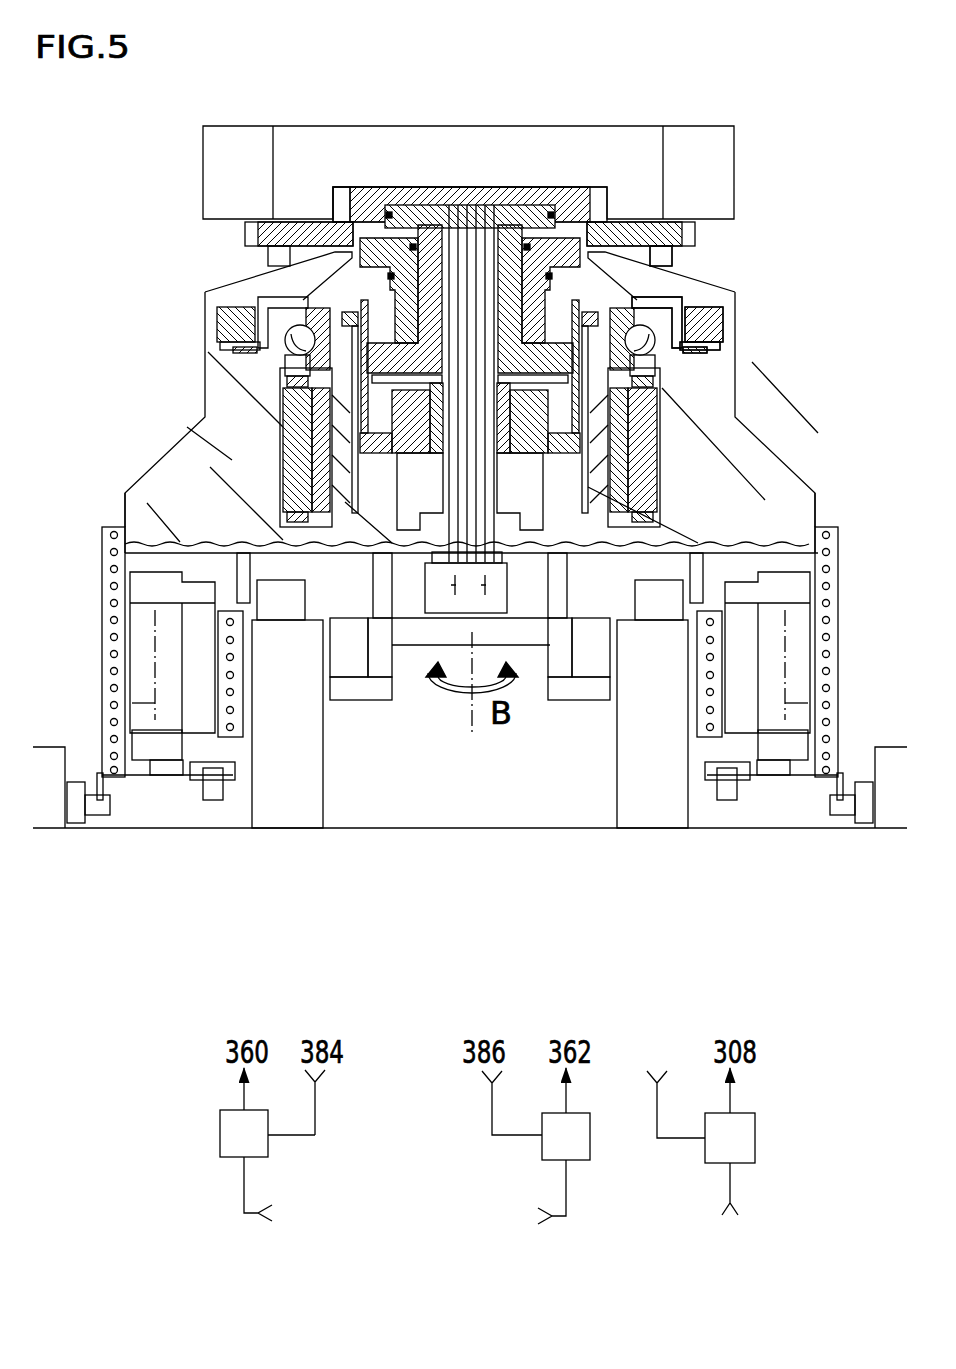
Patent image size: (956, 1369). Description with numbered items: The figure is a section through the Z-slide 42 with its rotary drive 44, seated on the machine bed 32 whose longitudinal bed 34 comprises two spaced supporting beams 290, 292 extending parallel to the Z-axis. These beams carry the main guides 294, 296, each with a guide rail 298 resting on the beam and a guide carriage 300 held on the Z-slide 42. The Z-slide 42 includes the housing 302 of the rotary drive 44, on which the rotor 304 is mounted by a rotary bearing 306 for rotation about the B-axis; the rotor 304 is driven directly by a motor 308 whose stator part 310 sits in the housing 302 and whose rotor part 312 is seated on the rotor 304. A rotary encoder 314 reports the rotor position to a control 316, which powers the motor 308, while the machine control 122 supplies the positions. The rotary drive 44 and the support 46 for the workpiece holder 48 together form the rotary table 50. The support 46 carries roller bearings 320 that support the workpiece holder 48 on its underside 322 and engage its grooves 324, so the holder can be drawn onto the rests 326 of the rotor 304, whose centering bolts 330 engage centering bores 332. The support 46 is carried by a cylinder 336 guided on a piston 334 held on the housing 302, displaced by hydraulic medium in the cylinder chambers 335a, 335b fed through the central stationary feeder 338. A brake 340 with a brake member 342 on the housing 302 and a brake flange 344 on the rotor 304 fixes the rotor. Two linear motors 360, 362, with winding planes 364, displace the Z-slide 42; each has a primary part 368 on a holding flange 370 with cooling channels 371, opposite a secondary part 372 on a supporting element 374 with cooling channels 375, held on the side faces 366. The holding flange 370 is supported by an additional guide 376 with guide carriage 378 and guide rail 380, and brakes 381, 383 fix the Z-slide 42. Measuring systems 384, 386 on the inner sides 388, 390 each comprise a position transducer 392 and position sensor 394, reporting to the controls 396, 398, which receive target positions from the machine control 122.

The rotary table 50 is at (662, 118).
The workpiece holder 48 is at (223, 207).
The centering bolts 330 is at (708, 232).
The centering bores 332 is at (690, 225).
The roller bearings 320 is at (338, 228).
The support 46 is at (373, 222).
The underside 322 is at (432, 222).
The grooves 324 is at (300, 222).
The rests 326 is at (670, 260).
The cylinder 336 is at (357, 236).
The piston 334 is at (516, 205).
The feeder 338 is at (500, 228).
The cylinder chamber 335a is at (468, 210).
The cylinder chamber 335b is at (545, 212).
The rotary drive 44 is at (192, 293).
The housing 302 is at (768, 446).
The Z-slide 42 is at (152, 514).
The rotary bearing 306 is at (283, 352).
The brake 340 is at (736, 314).
The rotor 304 is at (736, 291).
The brake member 342 is at (738, 336).
The brake flange 344 is at (698, 354).
The motor 308 is at (273, 413).
The stator part 310 is at (300, 478).
The rotor part 312 is at (318, 488).
The main guide 296 is at (684, 557).
The main guide 294 is at (243, 592).
The machine bed 32 is at (754, 824).
The longitudinal bed 34 is at (491, 804).
The guide carriage 300 is at (243, 563).
The guide rail 298 is at (257, 622).
The secondary part 372 is at (195, 675).
The winding planes 364 is at (150, 704).
The primary part 368 is at (148, 752).
The holding flange 370 is at (103, 725).
The linear motor 360 is at (167, 758).
The supporting beam 290 is at (331, 790).
The guide rail 380 is at (286, 803).
The guide carriage 378 is at (198, 782).
The additional guide 376 is at (213, 791).
The cooling channels 371 is at (122, 775).
The brake 381 is at (48, 822).
The position transducer 392 is at (343, 690).
The inner side 388 is at (338, 700).
The position sensor 394 is at (345, 668).
The measuring system 384 is at (372, 672).
The supporting element 374 is at (717, 660).
The cooling channels 375 is at (715, 702).
The linear motor 362 is at (785, 756).
The side faces 366 is at (693, 773).
The brake 383 is at (885, 827).
The measuring system 386 is at (588, 677).
The inner side 390 is at (615, 808).
The supporting beam 292 is at (655, 795).
The control 396 is at (272, 1112).
The control 398 is at (536, 1114).
The control 316 is at (730, 1115).
The rotary encoder 314 is at (672, 1085).
The machine control 122 is at (500, 1205).